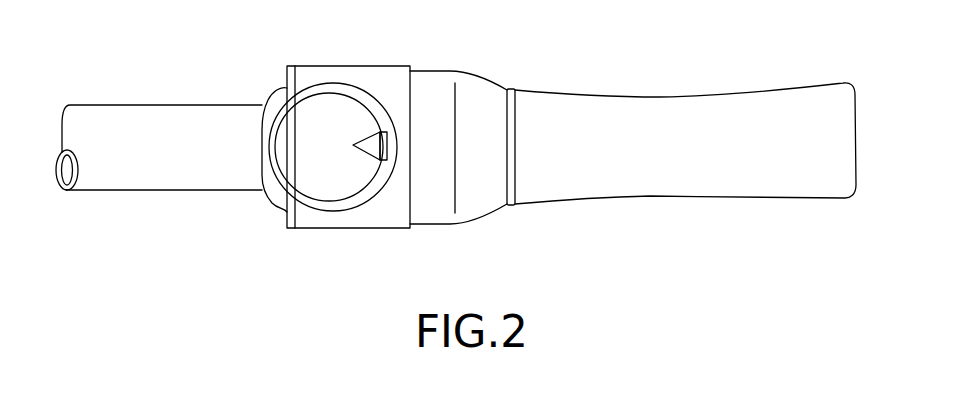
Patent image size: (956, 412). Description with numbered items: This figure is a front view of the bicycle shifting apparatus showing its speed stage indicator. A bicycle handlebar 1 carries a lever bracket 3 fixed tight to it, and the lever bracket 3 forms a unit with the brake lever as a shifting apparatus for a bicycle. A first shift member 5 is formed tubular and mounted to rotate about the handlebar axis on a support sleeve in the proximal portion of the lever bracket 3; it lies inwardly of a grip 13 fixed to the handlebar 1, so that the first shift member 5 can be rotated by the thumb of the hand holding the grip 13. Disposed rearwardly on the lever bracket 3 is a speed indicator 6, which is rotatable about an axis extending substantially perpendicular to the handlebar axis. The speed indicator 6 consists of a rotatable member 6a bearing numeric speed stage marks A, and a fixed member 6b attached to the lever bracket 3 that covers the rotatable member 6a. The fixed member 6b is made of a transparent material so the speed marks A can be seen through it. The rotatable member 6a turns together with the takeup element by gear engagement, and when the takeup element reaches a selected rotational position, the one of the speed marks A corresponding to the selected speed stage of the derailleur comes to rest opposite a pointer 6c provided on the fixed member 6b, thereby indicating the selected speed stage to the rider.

The bicycle handlebar 1 is at (118, 113).
The lever bracket 3 is at (393, 72).
The first shift member 5 is at (477, 210).
The speed indicator 6 is at (311, 77).
The rotatable member 6a is at (279, 188).
The fixed member 6b is at (349, 80).
The pointer 6c is at (376, 165).
The grip 13 is at (668, 185).
The numeric speed stage marks A is at (292, 128).